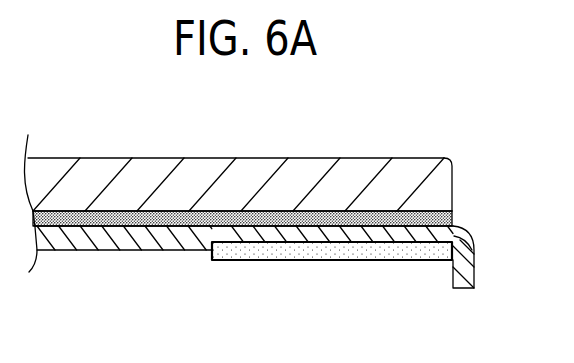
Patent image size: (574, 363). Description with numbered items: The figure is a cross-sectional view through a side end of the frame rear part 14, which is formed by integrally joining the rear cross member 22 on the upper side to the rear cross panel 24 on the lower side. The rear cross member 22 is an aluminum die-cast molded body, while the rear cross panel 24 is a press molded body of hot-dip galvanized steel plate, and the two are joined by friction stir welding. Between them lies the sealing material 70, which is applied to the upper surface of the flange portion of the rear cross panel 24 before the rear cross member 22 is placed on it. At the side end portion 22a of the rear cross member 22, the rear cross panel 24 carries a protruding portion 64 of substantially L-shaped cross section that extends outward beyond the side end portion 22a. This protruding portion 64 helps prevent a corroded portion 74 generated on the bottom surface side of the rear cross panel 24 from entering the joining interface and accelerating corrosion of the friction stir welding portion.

The frame rear part 14 is at (429, 123).
The rear cross member 22 is at (110, 157).
The side end portion 22a is at (453, 183).
The sealing material 70 is at (452, 218).
The rear cross panel 24 is at (108, 252).
The corroded portion 74 is at (337, 262).
The protruding portion 64 is at (463, 290).